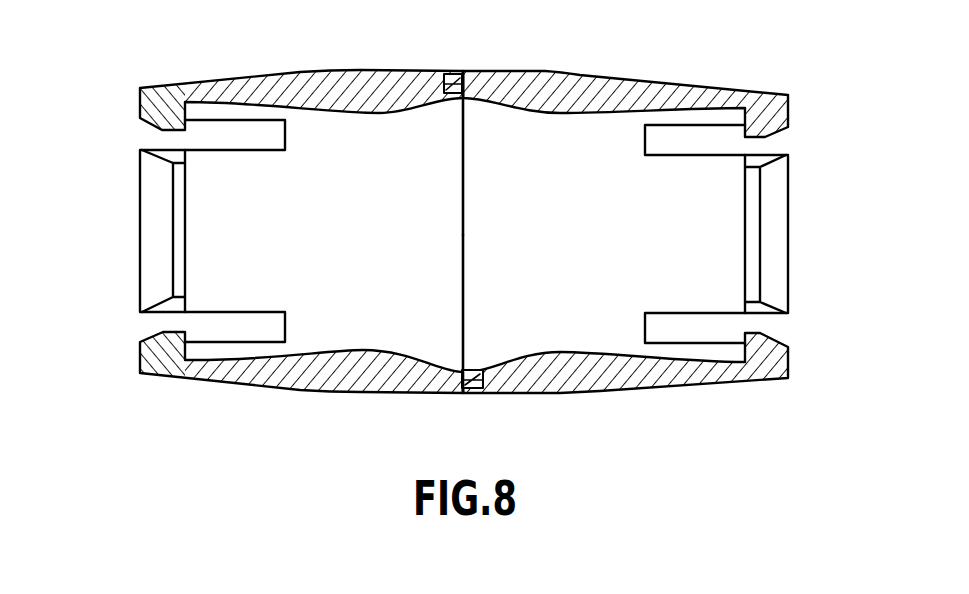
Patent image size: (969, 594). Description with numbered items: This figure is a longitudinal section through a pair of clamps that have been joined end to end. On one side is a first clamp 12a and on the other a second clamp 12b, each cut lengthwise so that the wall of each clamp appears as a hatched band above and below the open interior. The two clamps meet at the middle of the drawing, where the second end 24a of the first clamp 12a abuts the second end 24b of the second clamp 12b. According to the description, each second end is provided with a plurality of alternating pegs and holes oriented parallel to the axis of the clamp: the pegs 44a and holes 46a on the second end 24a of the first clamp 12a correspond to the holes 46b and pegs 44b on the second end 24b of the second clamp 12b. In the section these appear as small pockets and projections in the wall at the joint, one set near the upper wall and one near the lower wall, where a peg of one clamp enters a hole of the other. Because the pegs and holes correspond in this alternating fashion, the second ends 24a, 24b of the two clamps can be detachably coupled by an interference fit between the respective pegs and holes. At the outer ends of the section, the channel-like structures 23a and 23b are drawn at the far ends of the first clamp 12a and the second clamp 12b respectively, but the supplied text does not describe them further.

The first clamp 12a is at (618, 80).
The second clamp 12b is at (267, 74).
The first end channel member 23a is at (790, 223).
The second end channel member 23b is at (138, 230).
The second end of first clamp 24a is at (452, 370).
The second end of second clamp 24b is at (466, 99).
The pegs 44a is at (468, 75).
The pegs 44b is at (483, 393).
The holes 46a is at (476, 364).
The holes 46b is at (433, 75).